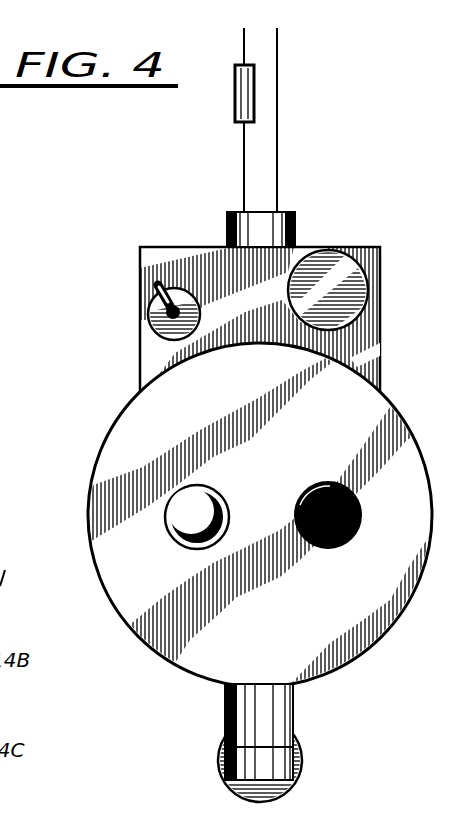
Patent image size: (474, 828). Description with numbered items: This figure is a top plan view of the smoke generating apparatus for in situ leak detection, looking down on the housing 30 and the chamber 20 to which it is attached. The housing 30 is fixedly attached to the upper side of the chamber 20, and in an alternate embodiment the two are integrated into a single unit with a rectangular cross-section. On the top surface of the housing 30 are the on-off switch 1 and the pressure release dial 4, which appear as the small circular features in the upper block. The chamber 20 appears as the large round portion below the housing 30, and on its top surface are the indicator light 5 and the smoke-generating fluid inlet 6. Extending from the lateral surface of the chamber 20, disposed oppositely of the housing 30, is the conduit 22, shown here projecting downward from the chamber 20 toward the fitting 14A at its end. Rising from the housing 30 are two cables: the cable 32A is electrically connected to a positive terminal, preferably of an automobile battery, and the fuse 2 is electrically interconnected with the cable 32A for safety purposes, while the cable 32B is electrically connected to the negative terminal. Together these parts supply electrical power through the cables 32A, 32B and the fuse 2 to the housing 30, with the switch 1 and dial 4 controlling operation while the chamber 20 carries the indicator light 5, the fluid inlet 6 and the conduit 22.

The on-off switch 1 is at (152, 294).
The fuse 2 is at (235, 96).
The pressure release dial 4 is at (340, 265).
The indicator light 5 is at (212, 490).
The smoke-generating fluid inlet 6 is at (313, 547).
The chamber 20 is at (100, 450).
The conduit 22 is at (294, 713).
The housing 30 is at (380, 334).
The cable 32A is at (244, 172).
The cable 32B is at (277, 144).
The ball joint 14A is at (230, 790).